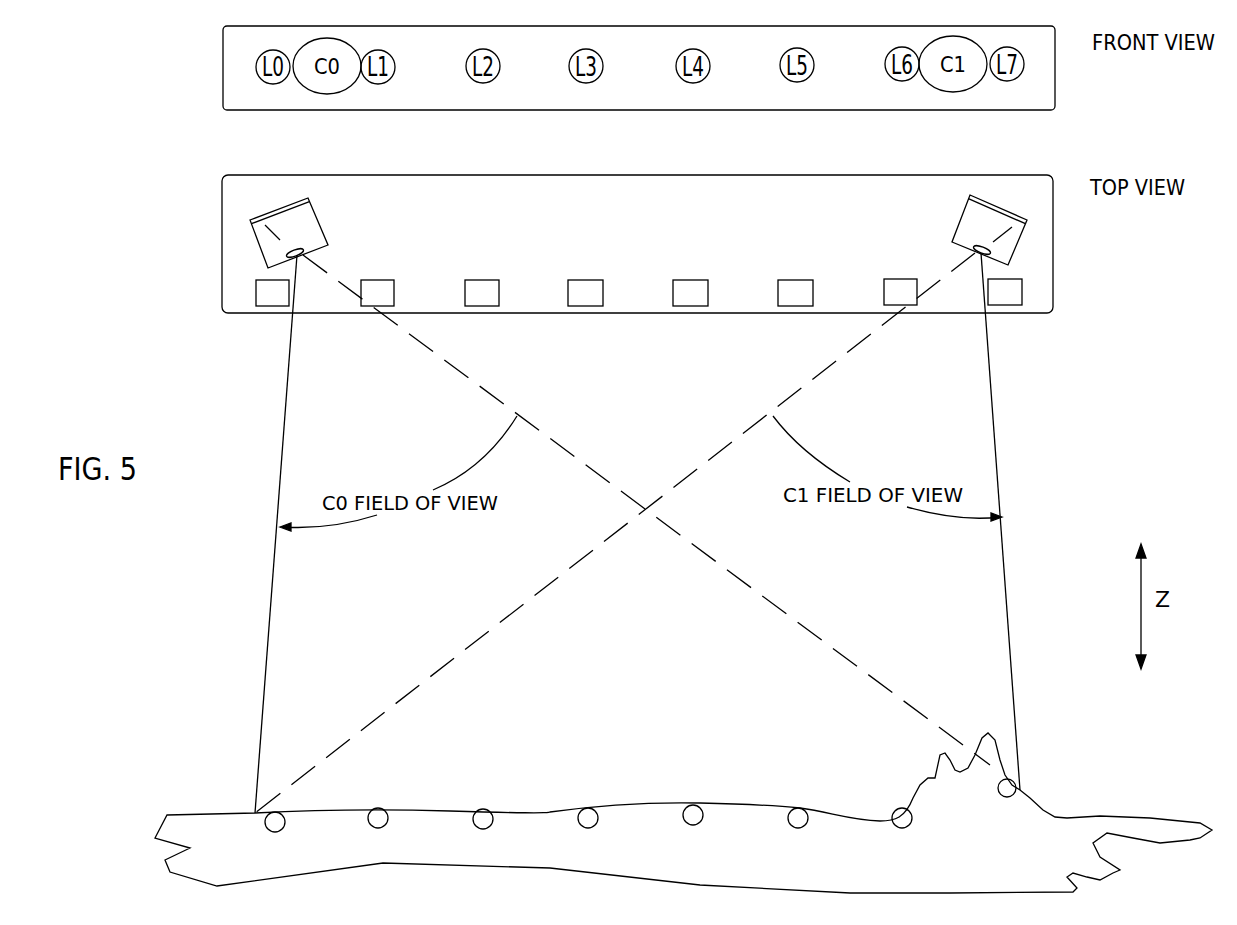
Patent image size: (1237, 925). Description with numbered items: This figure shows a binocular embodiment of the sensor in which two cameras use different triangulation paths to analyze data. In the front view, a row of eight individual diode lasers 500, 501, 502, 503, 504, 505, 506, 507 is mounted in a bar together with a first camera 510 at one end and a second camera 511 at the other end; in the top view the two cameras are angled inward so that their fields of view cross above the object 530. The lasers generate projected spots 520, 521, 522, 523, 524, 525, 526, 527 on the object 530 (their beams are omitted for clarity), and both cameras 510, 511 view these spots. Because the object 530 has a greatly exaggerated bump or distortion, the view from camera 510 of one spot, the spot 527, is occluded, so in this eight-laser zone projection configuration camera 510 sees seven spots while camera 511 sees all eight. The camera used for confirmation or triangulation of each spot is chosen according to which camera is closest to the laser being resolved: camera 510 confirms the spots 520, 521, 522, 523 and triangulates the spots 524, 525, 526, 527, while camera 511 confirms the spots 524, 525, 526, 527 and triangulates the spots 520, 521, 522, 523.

The diode laser 500 is at (254, 293).
The diode laser 501 is at (399, 276).
The diode laser 502 is at (504, 276).
The diode laser 503 is at (608, 276).
The diode laser 504 is at (713, 276).
The diode laser 505 is at (818, 276).
The diode laser 506 is at (922, 274).
The diode laser 507 is at (1023, 292).
The camera 510 is at (258, 245).
The camera 511 is at (1022, 240).
The projected spot 520 is at (274, 835).
The projected spot 521 is at (381, 831).
The projected spot 522 is at (484, 832).
The projected spot 523 is at (591, 830).
The projected spot 524 is at (699, 826).
The projected spot 525 is at (804, 829).
The projected spot 526 is at (906, 829).
The projected spot 527 is at (1013, 800).
The object 530 is at (683, 813).